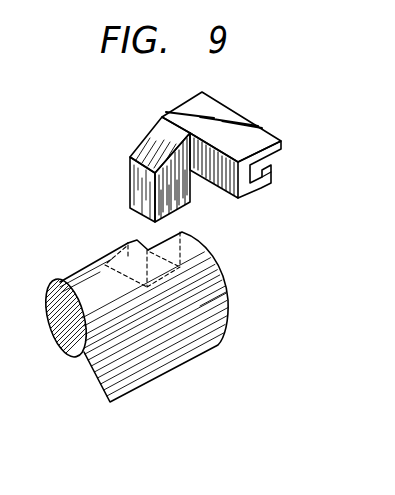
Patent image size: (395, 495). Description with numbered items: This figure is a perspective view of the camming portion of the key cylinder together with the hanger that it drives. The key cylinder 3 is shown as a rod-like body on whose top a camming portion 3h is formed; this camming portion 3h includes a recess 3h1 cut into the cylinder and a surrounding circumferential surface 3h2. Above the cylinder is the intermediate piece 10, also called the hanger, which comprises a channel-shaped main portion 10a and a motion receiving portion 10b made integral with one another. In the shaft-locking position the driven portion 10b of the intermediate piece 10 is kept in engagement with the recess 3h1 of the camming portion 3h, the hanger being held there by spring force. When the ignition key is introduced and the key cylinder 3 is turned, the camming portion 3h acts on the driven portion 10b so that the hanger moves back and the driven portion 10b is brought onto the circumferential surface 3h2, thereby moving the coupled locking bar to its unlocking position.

The intermediate piece 10 is at (186, 144).
The channel-shaped main portion 10a is at (218, 112).
The motion receiving portion 10b is at (131, 190).
The key cylinder 3 is at (200, 352).
The camming portion 3h is at (210, 255).
The recess 3h1 is at (128, 244).
The circumferential surface 3h2 is at (208, 302).